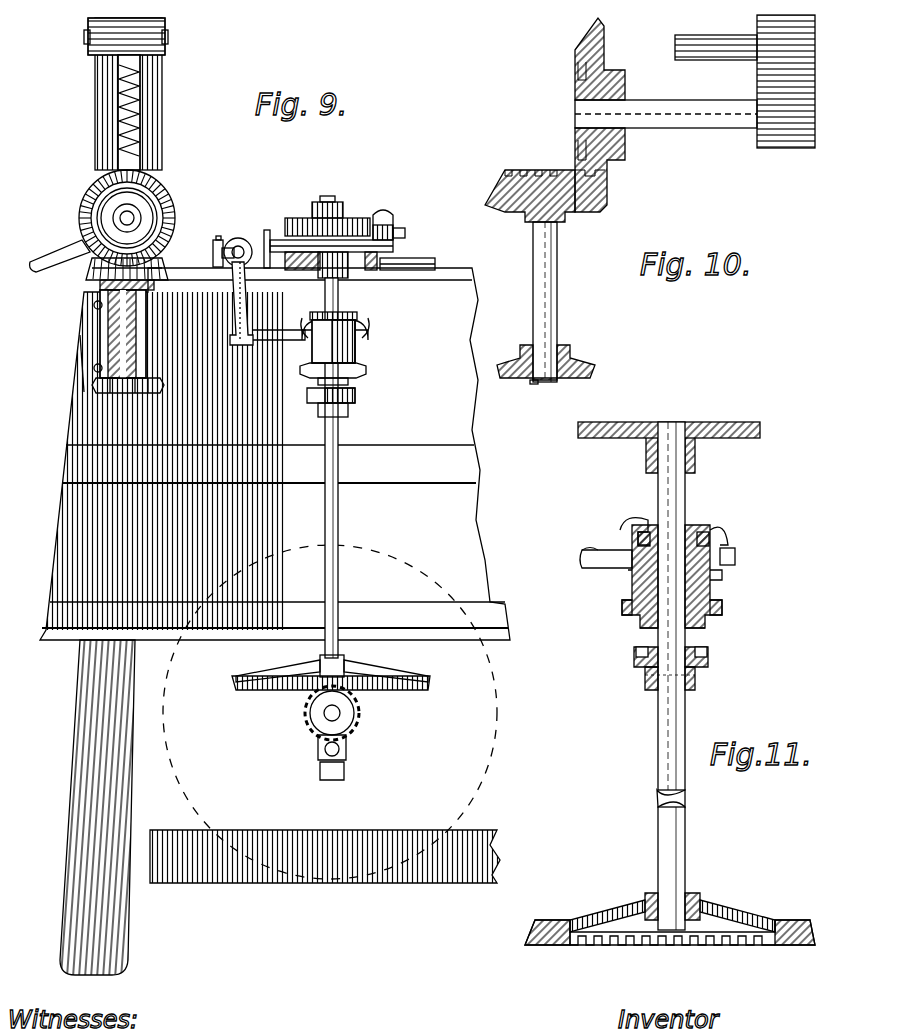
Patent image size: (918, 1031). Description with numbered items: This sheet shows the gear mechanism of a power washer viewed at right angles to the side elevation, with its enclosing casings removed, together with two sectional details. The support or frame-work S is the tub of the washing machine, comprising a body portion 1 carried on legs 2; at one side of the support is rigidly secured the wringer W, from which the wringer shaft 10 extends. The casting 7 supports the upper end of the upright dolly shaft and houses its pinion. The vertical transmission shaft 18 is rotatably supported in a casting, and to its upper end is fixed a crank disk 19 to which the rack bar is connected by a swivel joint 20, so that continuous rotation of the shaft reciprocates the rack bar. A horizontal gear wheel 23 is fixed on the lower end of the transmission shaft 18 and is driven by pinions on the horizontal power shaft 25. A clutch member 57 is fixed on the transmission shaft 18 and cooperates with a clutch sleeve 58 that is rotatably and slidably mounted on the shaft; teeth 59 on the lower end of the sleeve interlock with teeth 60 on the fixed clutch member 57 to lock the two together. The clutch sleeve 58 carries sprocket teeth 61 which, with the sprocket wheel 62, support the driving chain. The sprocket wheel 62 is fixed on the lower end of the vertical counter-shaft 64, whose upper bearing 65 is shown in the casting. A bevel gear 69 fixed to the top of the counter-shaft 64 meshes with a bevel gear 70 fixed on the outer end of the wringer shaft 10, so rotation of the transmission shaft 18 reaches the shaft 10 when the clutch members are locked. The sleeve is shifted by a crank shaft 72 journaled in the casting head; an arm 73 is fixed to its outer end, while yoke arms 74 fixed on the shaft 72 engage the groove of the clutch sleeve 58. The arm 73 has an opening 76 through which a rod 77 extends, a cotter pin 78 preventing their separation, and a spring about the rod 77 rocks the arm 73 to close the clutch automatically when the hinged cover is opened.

In FIG. 9, the body portion 1 is at (440, 527).
In FIG. 9, the legs 2 is at (80, 768).
In FIG. 9, the wringer W is at (148, 112).
In FIG. 9, the support or frame-work S is at (80, 382).
In FIG. 9, the casting 7 is at (330, 200).
In FIG. 9, the wringer shaft 10 is at (120, 217).
In FIG. 10, the wringer shaft 10 is at (657, 104).
In FIG. 9, the vertical transmission shaft 18 is at (342, 448).
In FIG. 11, the vertical transmission shaft 18 is at (680, 490).
In FIG. 9, the crank disk 19 is at (292, 240).
In FIG. 11, the crank disk 19 is at (725, 426).
In FIG. 9, the swivel joint 20 is at (385, 228).
In FIG. 9, the horizontal gear wheel 23 is at (415, 684).
In FIG. 11, the horizontal gear wheel 23 is at (735, 905).
In FIG. 9, the horizontal power shaft 25 is at (335, 713).
In FIG. 9, the clutch member 57 is at (356, 394).
In FIG. 11, the clutch member 57 is at (705, 670).
In FIG. 9, the clutch sleeve 58 is at (355, 345).
In FIG. 11, the clutch sleeve 58 is at (702, 580).
In FIG. 11, the teeth 59 is at (708, 625).
In FIG. 11, the teeth 60 is at (705, 650).
In FIG. 9, the sprocket teeth 61 is at (358, 368).
In FIG. 11, the sprocket teeth 61 is at (622, 606).
In FIG. 9, the sprocket wheel 62 is at (98, 398).
In FIG. 10, the sprocket wheel 62 is at (578, 362).
In FIG. 9, the vertical counter-shaft 64 is at (118, 322).
In FIG. 10, the vertical counter-shaft 64 is at (555, 290).
In FIG. 9, the upper bearing 65 is at (110, 292).
In FIG. 9, the bevel gear 69 is at (85, 248).
In FIG. 10, the bevel gear 69 is at (578, 212).
In FIG. 9, the bevel gear 70 is at (108, 196).
In FIG. 10, the bevel gear 70 is at (580, 50).
In FIG. 9, the crank shaft 72 is at (286, 330).
In FIG. 11, the crank shaft 72 is at (598, 555).
In FIG. 9, the arm 73 is at (268, 250).
In FIG. 11, the yoke arms 74 is at (695, 535).
In FIG. 9, the opening 76 is at (238, 245).
In FIG. 9, the rod 77 is at (218, 258).
In FIG. 9, the cotter pin 78 is at (216, 240).